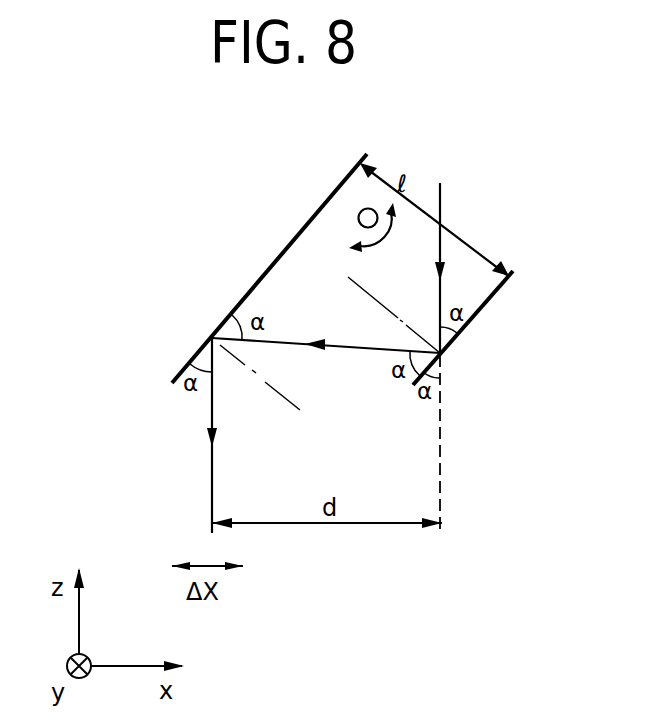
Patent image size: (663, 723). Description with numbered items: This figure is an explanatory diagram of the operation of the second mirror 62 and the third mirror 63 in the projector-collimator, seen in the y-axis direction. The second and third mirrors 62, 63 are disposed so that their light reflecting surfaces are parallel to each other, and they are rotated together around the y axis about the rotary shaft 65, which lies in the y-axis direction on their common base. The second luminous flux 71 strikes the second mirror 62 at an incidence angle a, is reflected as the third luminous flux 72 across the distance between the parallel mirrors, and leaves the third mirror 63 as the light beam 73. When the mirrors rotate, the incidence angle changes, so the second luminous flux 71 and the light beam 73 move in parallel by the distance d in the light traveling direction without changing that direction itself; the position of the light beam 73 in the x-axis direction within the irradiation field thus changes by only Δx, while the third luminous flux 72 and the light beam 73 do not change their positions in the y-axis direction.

The second mirror 62 is at (490, 308).
The third mirror 63 is at (320, 207).
The rotary shaft 65 is at (359, 209).
The second luminous flux 71 is at (439, 249).
The third luminous flux 72 is at (347, 350).
The light beam 73 is at (210, 415).